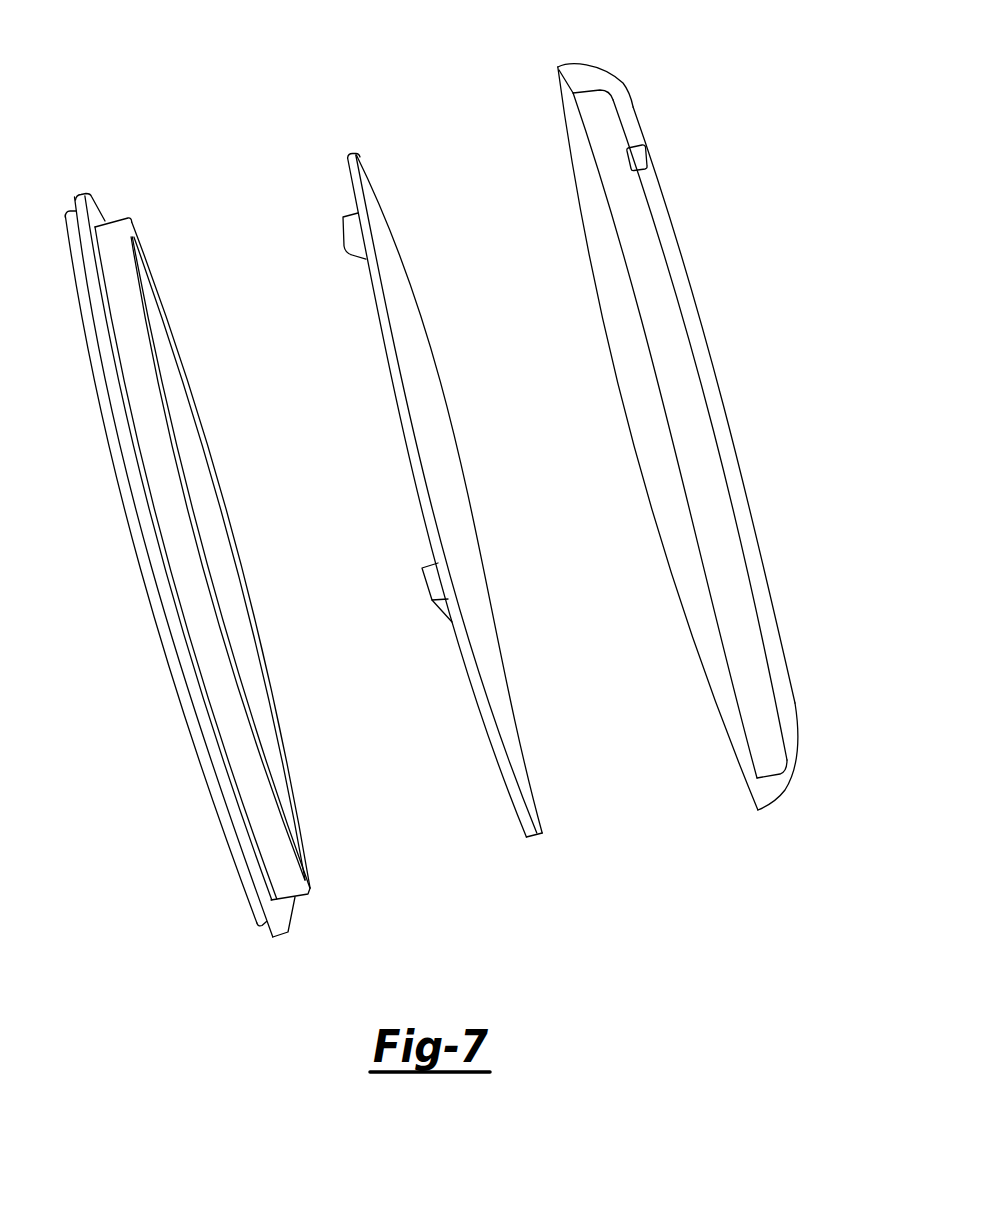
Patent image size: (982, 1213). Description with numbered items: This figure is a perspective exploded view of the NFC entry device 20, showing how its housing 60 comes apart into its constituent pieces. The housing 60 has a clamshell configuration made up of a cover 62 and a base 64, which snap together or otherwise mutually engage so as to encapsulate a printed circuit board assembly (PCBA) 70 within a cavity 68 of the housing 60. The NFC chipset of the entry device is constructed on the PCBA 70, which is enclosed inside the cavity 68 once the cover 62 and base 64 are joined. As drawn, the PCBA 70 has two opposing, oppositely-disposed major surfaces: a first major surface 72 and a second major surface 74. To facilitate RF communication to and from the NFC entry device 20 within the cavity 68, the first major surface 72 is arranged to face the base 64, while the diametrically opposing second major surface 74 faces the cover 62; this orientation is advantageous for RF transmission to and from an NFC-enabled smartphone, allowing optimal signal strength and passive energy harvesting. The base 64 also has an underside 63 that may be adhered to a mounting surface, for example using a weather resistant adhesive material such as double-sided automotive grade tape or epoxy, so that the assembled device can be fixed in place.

The NFC entry device 20 is at (147, 65).
The housing 60 is at (720, 437).
The cover 62 is at (797, 705).
The underside 63 is at (217, 566).
The base 64 is at (303, 898).
The cavity 68 is at (240, 220).
The printed circuit board assembly 70 is at (492, 496).
The first major surface 72 is at (454, 754).
The second major surface 74 is at (578, 721).